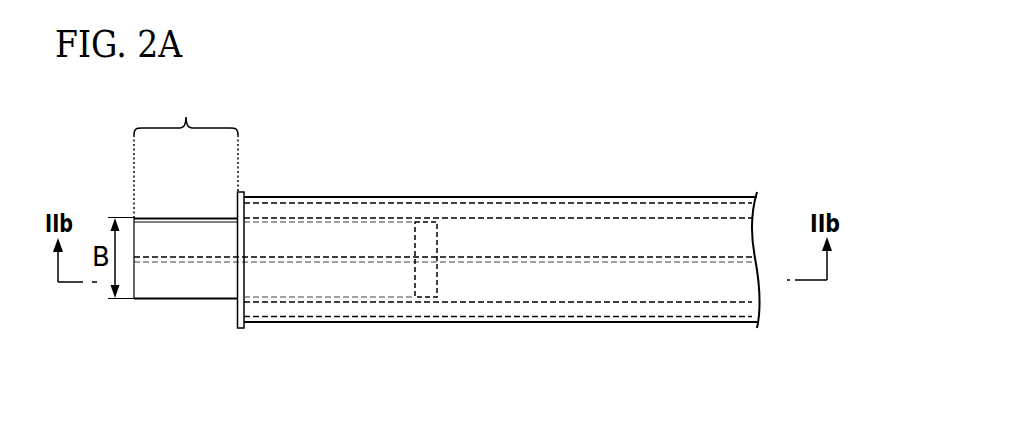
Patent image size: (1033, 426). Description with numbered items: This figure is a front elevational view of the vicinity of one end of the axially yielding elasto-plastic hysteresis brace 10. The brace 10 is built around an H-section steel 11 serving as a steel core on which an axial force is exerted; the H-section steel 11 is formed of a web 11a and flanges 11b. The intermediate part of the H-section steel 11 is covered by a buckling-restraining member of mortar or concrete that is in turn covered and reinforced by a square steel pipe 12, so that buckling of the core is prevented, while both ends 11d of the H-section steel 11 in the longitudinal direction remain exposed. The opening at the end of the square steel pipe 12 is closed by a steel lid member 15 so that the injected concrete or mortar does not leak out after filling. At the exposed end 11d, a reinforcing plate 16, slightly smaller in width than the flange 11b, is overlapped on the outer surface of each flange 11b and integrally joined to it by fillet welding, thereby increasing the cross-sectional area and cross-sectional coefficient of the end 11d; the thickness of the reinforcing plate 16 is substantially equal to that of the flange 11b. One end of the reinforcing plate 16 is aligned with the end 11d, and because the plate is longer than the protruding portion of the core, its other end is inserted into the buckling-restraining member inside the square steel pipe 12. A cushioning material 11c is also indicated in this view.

The axially yielding elasto-plastic hysteresis brace 10 is at (533, 177).
The H-section steel 11 is at (527, 302).
The web 11a is at (680, 257).
The flange 11b is at (593, 218).
The cushioning material 11c is at (425, 282).
The end of the H-section steel 11d is at (186, 154).
The square steel pipe 12 is at (637, 322).
The steel lid member 15 is at (237, 310).
The reinforcing plate 16 is at (195, 218).